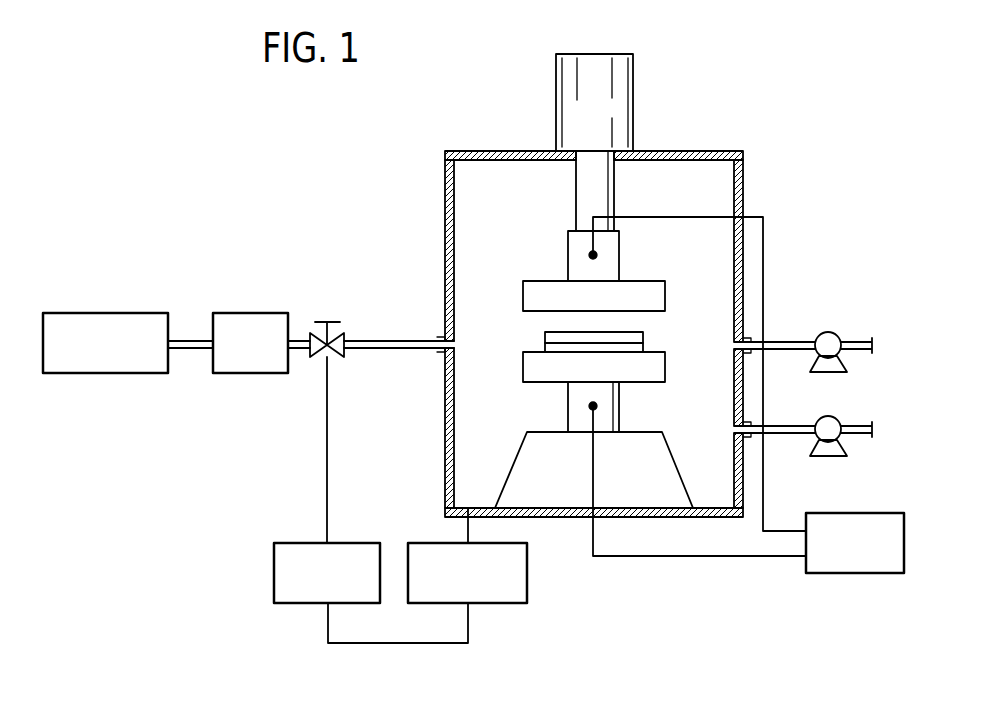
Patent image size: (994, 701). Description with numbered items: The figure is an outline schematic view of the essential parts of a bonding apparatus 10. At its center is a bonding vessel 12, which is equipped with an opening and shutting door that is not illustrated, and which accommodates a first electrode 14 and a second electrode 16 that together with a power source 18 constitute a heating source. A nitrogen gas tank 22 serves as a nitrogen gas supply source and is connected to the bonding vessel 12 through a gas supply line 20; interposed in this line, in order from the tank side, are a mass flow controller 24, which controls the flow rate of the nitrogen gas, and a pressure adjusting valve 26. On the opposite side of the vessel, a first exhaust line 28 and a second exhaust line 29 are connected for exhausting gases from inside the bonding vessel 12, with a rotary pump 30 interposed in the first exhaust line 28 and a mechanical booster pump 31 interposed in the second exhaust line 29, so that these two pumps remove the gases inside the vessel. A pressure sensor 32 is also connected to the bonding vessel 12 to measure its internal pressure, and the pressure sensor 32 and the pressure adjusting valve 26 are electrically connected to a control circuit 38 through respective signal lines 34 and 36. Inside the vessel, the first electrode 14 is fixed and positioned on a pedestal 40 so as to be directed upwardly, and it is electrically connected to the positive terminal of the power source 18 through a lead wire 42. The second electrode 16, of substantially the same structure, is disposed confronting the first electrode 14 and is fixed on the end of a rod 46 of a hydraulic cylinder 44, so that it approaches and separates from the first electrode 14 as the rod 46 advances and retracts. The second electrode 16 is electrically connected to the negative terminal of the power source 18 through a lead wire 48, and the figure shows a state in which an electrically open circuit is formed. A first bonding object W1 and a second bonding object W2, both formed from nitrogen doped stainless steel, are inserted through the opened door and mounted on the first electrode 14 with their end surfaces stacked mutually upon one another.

The bonding apparatus 10 is at (183, 170).
The bonding vessel 12 is at (487, 151).
The first electrode 14 is at (665, 373).
The second electrode 16 is at (665, 302).
The power source 18 is at (890, 513).
The gas supply line 20 is at (191, 341).
The nitrogen gas tank 22 is at (143, 313).
The mass flow controller 24 is at (263, 313).
The pressure adjusting valve 26 is at (330, 322).
The first exhaust line 28 is at (790, 342).
The second exhaust line 29 is at (790, 427).
The rotary pump 30 is at (828, 332).
The mechanical booster pump 31 is at (828, 416).
The pressure sensor 32 is at (515, 603).
The signal line 34 is at (383, 644).
The signal line 36 is at (329, 429).
The control circuit 38 is at (366, 543).
The pedestal 40 is at (518, 456).
The lead wire 42 is at (705, 557).
The hydraulic cylinder 44 is at (626, 100).
The rod 46 is at (584, 193).
The lead wire 48 is at (766, 258).
The first bonding object W1 is at (552, 347).
The second bonding object W2 is at (550, 333).